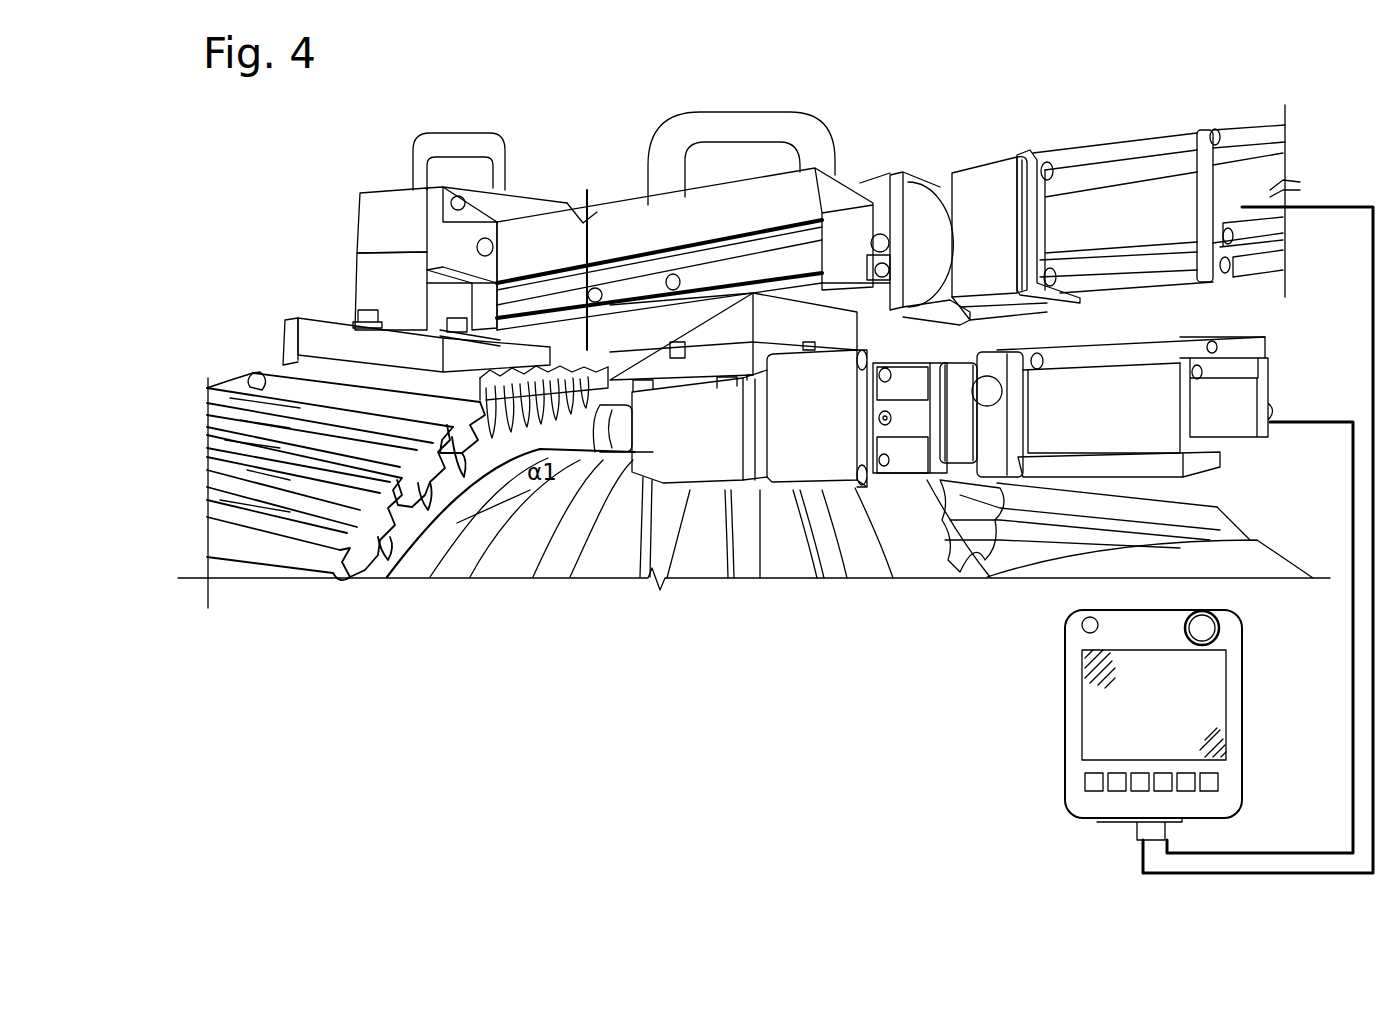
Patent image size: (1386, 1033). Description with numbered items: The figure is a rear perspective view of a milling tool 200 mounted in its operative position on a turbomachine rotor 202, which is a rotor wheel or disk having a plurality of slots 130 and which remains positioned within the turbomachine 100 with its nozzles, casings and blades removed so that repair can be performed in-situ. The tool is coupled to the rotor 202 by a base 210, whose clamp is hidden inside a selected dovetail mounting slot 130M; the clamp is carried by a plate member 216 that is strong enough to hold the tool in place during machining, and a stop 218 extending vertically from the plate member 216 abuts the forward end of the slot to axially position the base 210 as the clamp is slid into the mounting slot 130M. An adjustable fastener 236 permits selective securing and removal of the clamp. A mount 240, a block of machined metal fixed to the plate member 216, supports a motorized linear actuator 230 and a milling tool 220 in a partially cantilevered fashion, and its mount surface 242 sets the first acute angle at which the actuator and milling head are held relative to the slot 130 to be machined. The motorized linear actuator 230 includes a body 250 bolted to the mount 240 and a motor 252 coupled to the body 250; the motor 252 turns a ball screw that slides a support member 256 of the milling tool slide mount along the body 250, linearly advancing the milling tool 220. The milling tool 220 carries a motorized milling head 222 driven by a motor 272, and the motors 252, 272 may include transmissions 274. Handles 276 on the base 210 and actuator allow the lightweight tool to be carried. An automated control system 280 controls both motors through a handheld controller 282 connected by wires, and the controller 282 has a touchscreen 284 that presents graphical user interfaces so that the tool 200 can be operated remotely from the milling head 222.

The turbomachine 100 is at (612, 545).
The slots 130 is at (207, 388).
The mounting slot 130M is at (235, 372).
The milling tool 200 is at (558, 170).
The turbomachine rotor 202 is at (247, 470).
The base 210 is at (538, 215).
The plate member 216 is at (322, 338).
The stop 218 is at (296, 364).
The milling tool 220 is at (705, 462).
The motorized milling head 222 is at (590, 192).
The motorized linear actuator 230 is at (740, 233).
The adjustable fastener 236 is at (455, 322).
The mount 240 is at (392, 233).
The mount surface 242 is at (440, 292).
The body 250 is at (666, 249).
The motor 252 is at (1113, 198).
The support member 256 is at (733, 336).
The motor 272 is at (1060, 422).
The transmissions 274 is at (848, 428).
The handle 276 is at (457, 143).
The automated control system 280 is at (1117, 736).
The handheld controller 282 is at (1092, 807).
The touchscreen 284 is at (1154, 705).